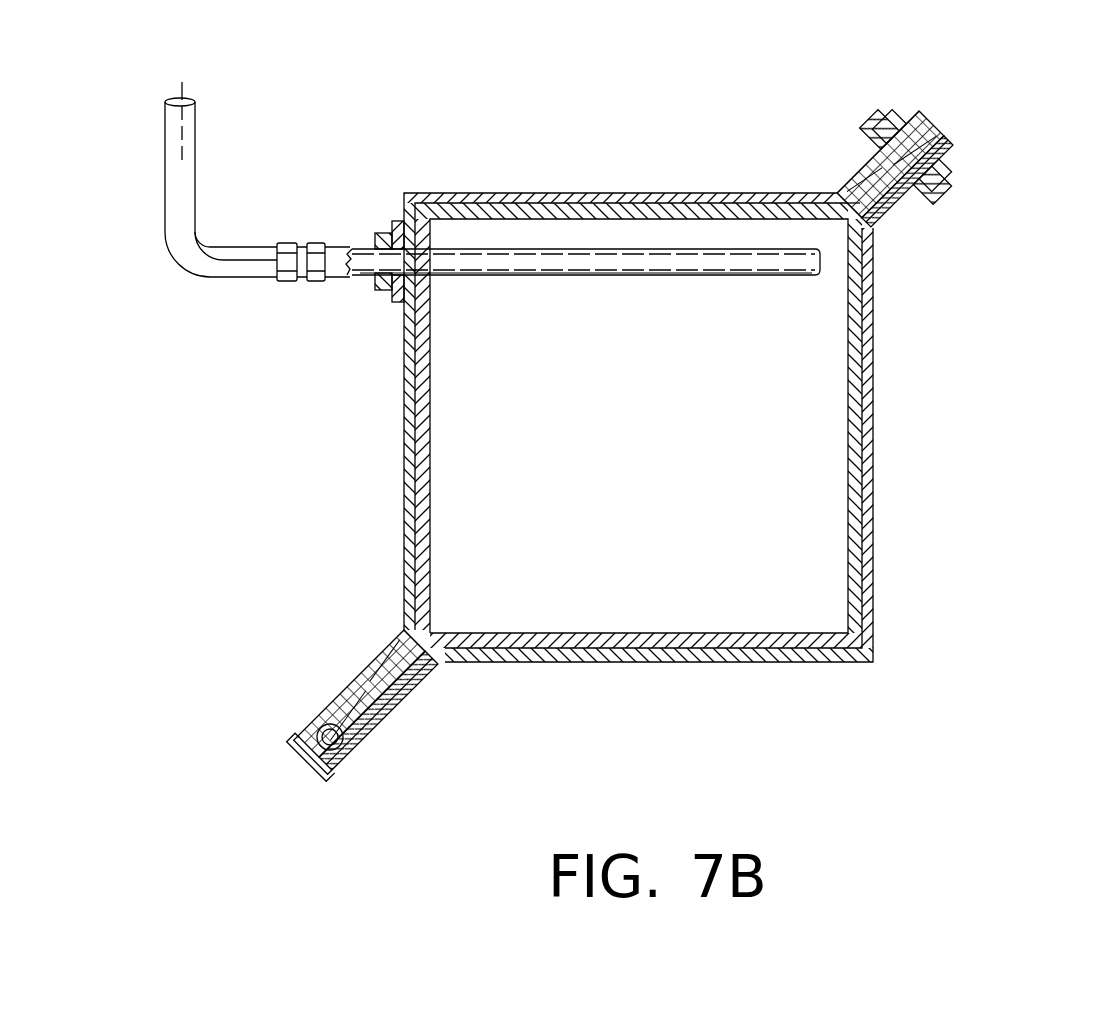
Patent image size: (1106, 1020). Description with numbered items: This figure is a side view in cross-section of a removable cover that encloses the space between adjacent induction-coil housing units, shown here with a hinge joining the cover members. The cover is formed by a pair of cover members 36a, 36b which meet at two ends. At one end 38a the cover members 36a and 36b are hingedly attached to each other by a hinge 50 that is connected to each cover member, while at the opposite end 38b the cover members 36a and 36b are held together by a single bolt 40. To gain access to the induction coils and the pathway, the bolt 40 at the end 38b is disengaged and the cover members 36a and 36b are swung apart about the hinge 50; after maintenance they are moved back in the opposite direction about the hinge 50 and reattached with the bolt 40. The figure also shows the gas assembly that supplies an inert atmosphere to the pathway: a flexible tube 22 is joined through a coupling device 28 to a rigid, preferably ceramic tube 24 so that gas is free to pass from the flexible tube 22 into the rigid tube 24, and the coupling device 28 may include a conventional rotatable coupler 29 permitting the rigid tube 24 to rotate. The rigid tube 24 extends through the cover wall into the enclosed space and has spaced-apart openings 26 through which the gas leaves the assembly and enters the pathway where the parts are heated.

The flexible tube 22 is at (197, 143).
The rigid tube 24 is at (467, 249).
The openings 26 is at (540, 277).
The coupling device 28 is at (293, 230).
The rotatable coupler 29 is at (317, 245).
The cover member 36a is at (357, 697).
The cover member 36b is at (433, 660).
The end 38a is at (365, 716).
The end 38b is at (947, 117).
The bolt 40 is at (923, 197).
The hinge 50 is at (315, 727).